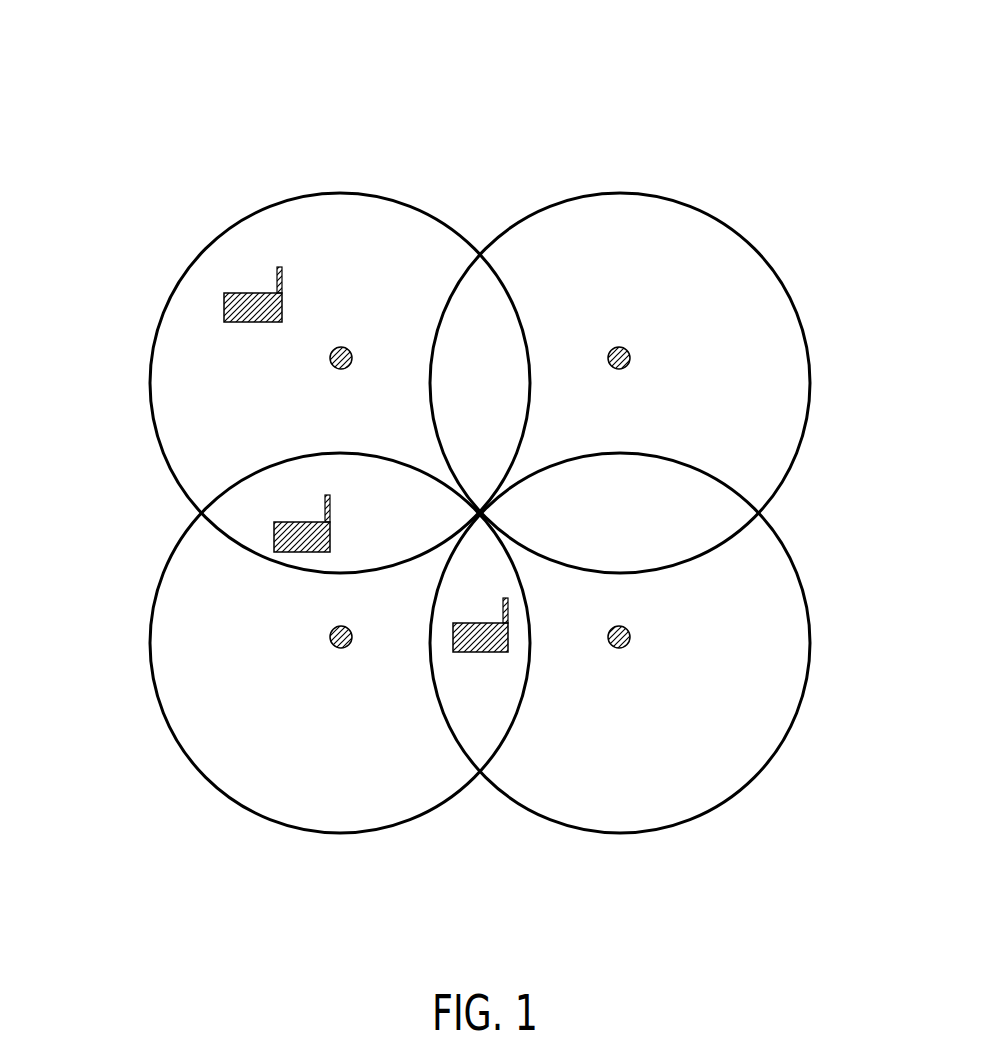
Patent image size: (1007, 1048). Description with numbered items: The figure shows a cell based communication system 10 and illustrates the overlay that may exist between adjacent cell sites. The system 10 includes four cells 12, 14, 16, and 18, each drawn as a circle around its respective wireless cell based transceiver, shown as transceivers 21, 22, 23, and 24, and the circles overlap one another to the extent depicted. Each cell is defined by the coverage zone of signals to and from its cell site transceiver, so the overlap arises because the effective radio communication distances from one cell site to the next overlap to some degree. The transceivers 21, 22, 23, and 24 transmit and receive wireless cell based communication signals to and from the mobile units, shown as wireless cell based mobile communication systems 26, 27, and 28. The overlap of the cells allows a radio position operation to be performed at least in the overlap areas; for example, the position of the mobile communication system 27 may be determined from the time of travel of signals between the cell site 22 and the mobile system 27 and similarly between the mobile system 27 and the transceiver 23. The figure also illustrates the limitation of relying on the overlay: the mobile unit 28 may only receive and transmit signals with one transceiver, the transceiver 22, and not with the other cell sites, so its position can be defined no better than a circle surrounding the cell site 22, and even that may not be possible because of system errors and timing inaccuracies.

The cell based communication system 10 is at (836, 72).
The cell 12 is at (640, 193).
The cell 14 is at (350, 193).
The cell 16 is at (170, 727).
The cell 18 is at (693, 818).
The wireless cell based transceiver 21 is at (630, 348).
The wireless cell based transceiver 22 is at (352, 350).
The wireless cell based transceiver 23 is at (342, 649).
The wireless cell based transceiver 24 is at (619, 650).
The wireless cell based mobile communication system 26 is at (478, 653).
The wireless cell based mobile communication system 27 is at (293, 520).
The wireless cell based mobile communication system 28 is at (250, 323).